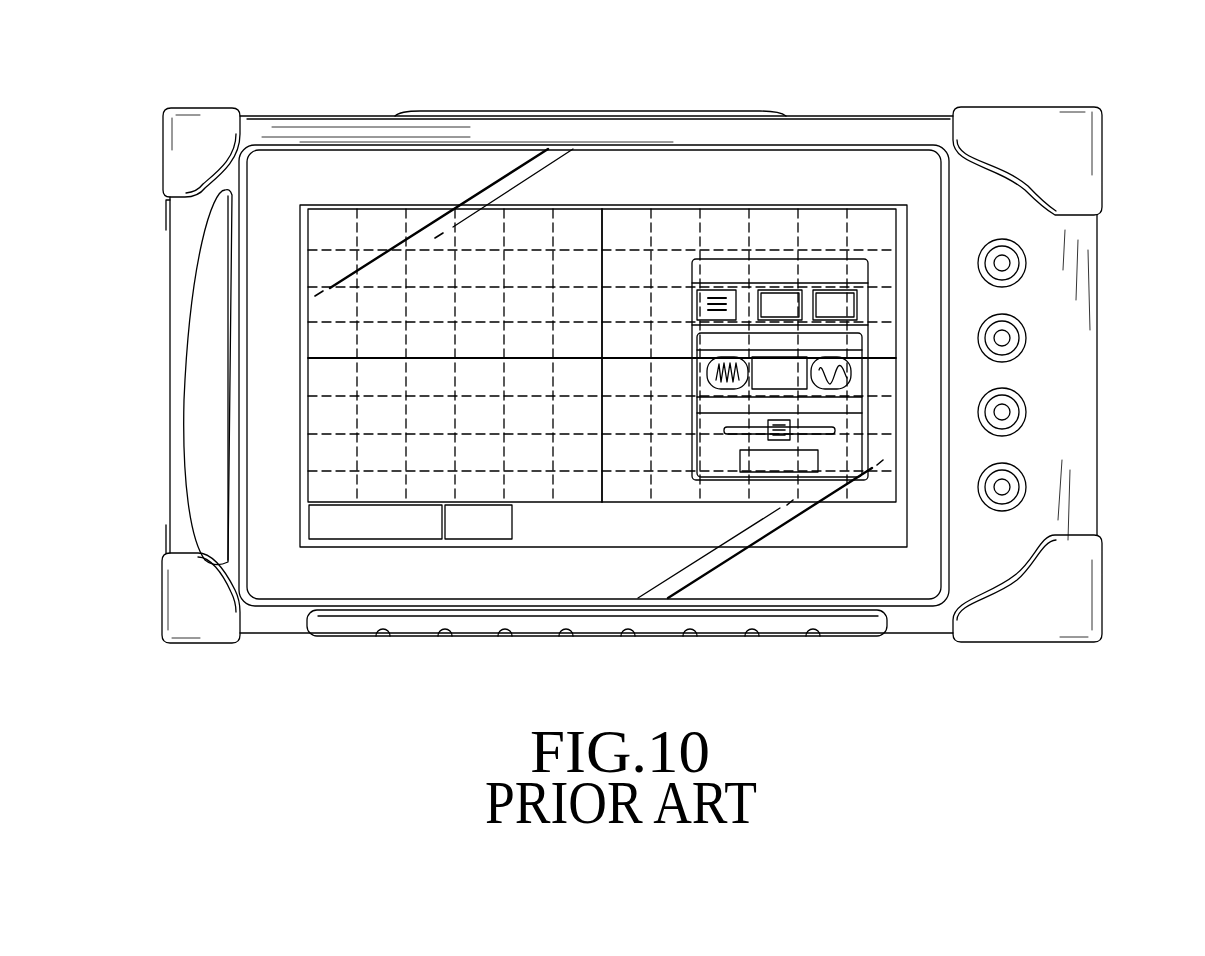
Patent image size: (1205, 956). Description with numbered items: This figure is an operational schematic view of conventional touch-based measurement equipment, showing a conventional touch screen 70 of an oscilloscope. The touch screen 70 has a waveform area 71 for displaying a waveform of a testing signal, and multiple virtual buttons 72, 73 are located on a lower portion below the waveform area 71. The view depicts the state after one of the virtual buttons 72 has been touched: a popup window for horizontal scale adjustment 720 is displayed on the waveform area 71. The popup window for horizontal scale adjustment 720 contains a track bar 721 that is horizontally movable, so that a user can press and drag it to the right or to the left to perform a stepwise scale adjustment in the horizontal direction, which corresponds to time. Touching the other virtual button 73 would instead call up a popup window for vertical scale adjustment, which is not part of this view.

The touch screen 70 is at (357, 130).
The waveform area 71 is at (590, 203).
The virtual button 72 is at (493, 540).
The virtual button 73 is at (376, 540).
The popup window for horizontal scale adjustment 720 is at (820, 257).
The track bar 721 is at (792, 438).